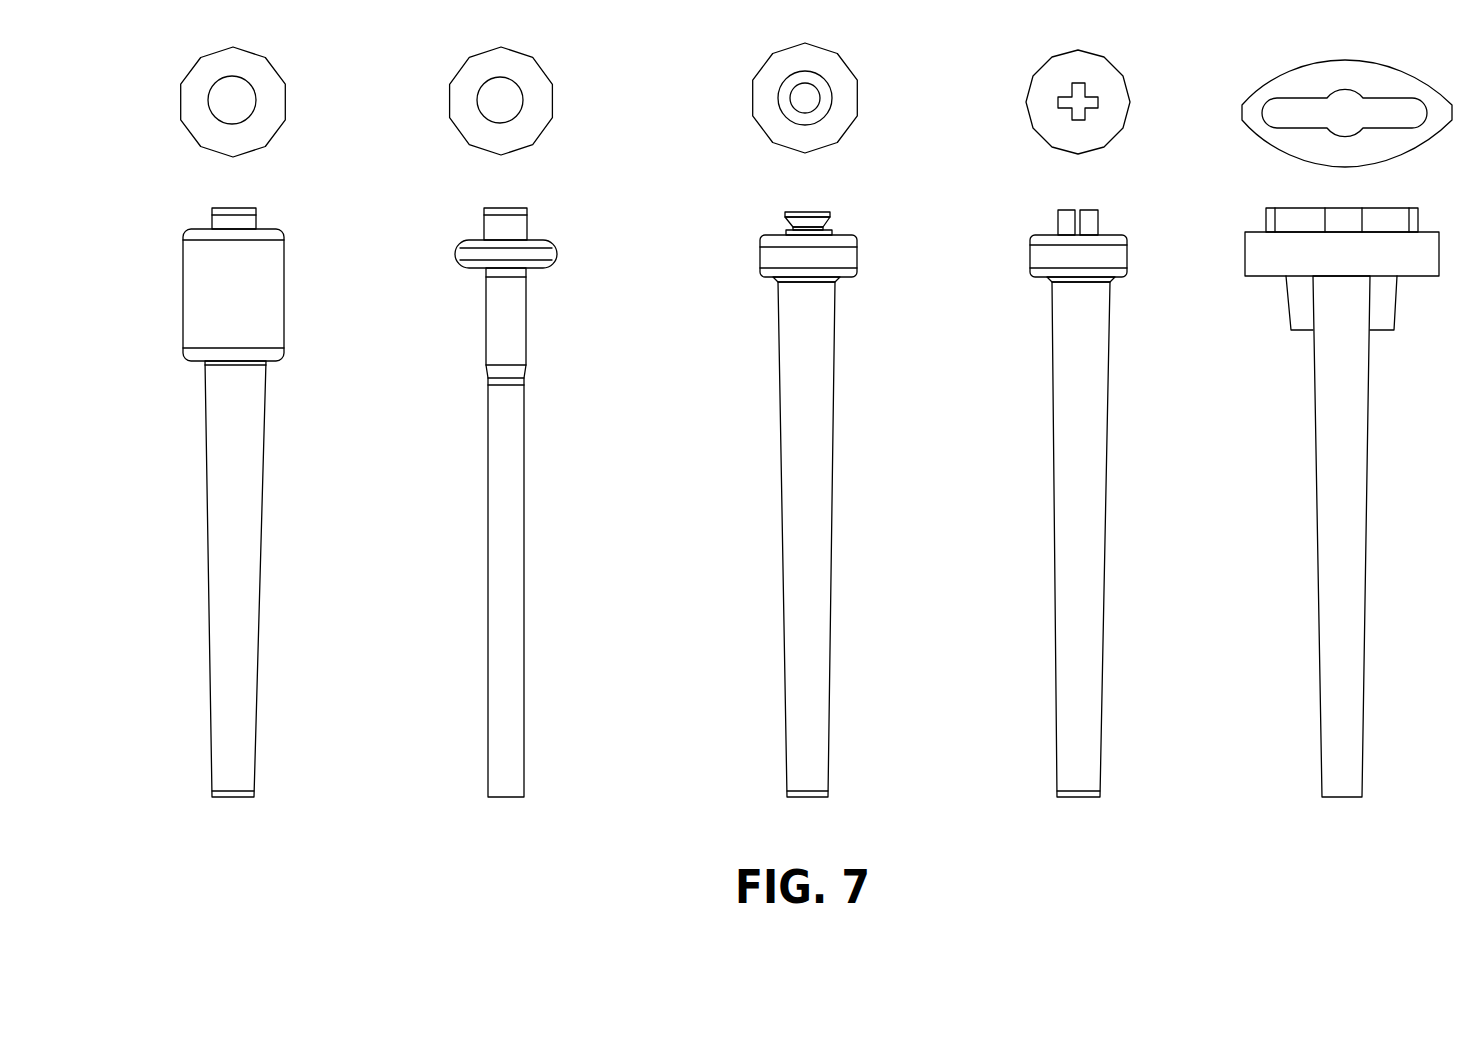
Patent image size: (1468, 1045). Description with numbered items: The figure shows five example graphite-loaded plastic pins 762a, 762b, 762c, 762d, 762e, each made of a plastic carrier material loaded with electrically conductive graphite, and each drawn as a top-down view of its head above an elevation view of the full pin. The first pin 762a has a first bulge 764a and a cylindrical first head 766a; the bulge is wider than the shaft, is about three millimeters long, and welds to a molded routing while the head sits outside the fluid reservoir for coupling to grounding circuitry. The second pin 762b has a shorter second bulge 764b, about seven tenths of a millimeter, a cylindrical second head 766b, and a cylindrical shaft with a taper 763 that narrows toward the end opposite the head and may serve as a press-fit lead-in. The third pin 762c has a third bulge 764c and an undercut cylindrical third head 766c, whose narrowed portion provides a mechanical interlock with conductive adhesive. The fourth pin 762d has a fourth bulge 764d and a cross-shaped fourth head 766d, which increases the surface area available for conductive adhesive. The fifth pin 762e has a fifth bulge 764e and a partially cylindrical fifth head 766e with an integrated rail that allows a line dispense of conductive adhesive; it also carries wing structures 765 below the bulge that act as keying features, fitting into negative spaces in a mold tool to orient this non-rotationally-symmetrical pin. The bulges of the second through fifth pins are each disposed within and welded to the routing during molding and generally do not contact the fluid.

The first graphite-loaded plastic pin 762a is at (206, 498).
The second graphite-loaded plastic pin 762b is at (486, 498).
The third graphite-loaded plastic pin 762c is at (781, 498).
The fourth graphite-loaded plastic pin 762d is at (1051, 498).
The fifth graphite-loaded plastic pin 762e is at (1316, 499).
The taper 763 is at (485, 368).
The first bulge 764a is at (231, 209).
The second bulge 764b is at (500, 208).
The third bulge 764c is at (803, 212).
The fourth bulge 764d is at (1080, 210).
The fifth bulge 764e is at (1287, 208).
The wing structures 765 is at (1298, 302).
The first head 766a is at (227, 123).
The second head 766b is at (495, 123).
The third head 766c is at (800, 124).
The fourth head 766d is at (1077, 120).
The fifth head 766e is at (1288, 128).